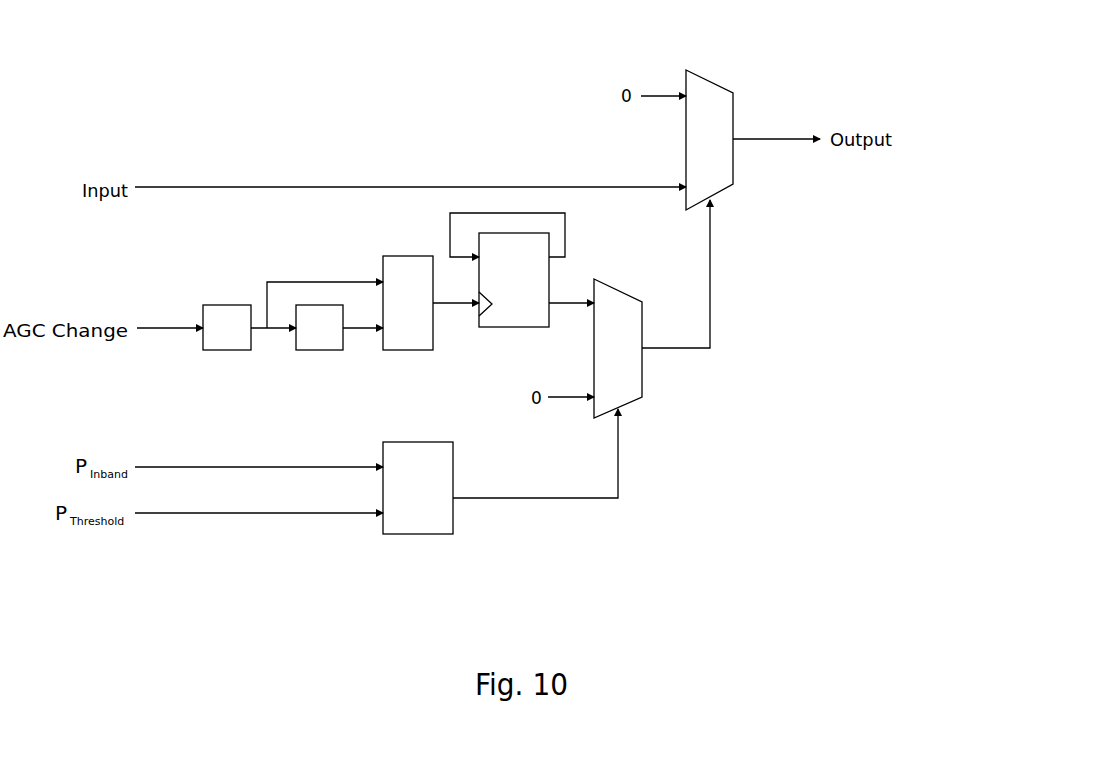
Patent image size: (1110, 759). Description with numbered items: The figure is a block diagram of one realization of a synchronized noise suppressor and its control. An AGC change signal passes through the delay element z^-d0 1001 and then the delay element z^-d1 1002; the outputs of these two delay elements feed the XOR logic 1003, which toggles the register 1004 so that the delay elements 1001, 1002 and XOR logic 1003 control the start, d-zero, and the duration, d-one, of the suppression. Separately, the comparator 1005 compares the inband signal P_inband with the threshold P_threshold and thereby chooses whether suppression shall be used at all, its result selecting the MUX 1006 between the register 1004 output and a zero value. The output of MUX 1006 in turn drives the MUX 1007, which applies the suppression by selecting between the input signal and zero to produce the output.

The delay element z^-d0 1001 is at (225, 355).
The delay element z^-d1 1002 is at (318, 355).
The XOR logic 1003 is at (410, 355).
The register 1004 is at (551, 278).
The comparator 1005 is at (410, 536).
The MUX 1006 is at (645, 385).
The MUX 1007 is at (716, 78).